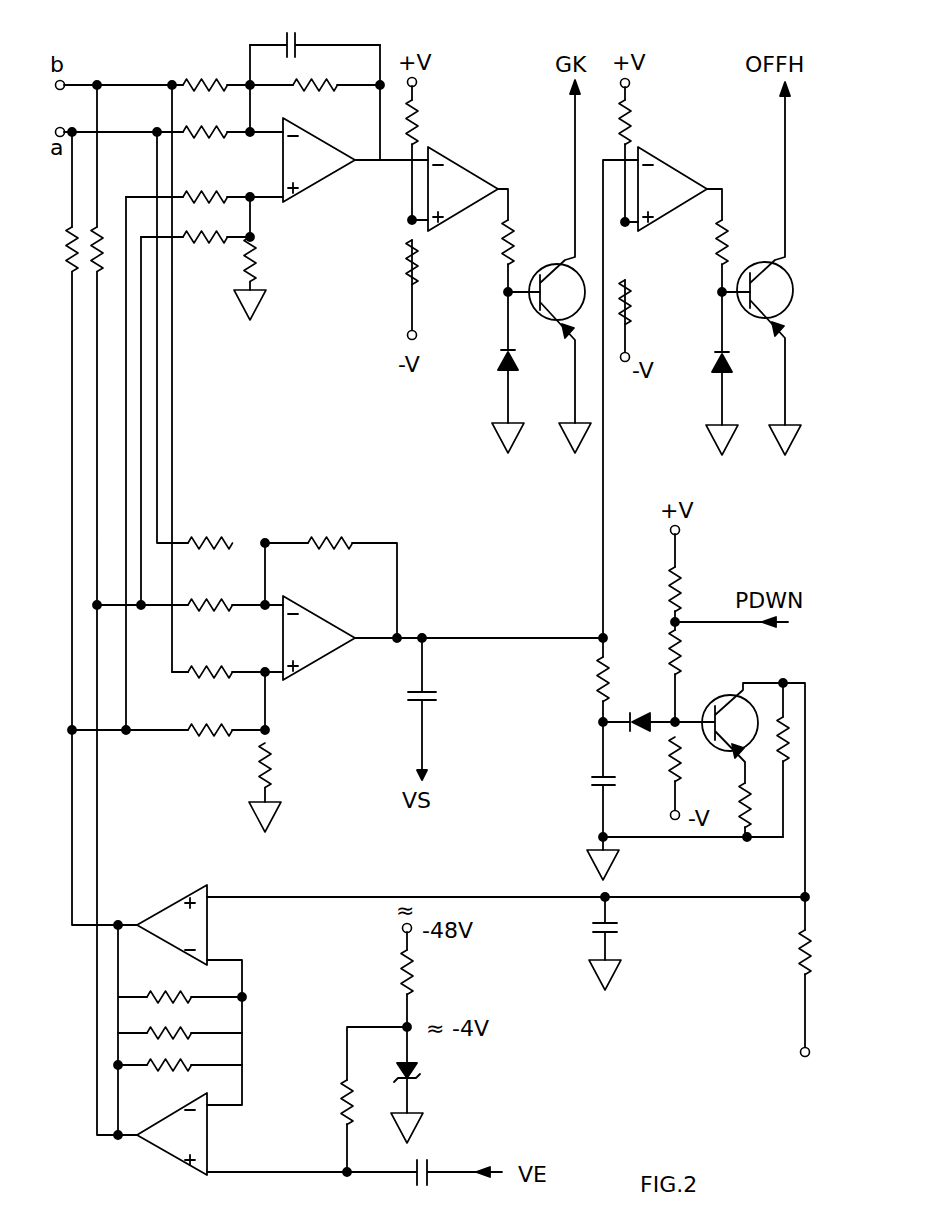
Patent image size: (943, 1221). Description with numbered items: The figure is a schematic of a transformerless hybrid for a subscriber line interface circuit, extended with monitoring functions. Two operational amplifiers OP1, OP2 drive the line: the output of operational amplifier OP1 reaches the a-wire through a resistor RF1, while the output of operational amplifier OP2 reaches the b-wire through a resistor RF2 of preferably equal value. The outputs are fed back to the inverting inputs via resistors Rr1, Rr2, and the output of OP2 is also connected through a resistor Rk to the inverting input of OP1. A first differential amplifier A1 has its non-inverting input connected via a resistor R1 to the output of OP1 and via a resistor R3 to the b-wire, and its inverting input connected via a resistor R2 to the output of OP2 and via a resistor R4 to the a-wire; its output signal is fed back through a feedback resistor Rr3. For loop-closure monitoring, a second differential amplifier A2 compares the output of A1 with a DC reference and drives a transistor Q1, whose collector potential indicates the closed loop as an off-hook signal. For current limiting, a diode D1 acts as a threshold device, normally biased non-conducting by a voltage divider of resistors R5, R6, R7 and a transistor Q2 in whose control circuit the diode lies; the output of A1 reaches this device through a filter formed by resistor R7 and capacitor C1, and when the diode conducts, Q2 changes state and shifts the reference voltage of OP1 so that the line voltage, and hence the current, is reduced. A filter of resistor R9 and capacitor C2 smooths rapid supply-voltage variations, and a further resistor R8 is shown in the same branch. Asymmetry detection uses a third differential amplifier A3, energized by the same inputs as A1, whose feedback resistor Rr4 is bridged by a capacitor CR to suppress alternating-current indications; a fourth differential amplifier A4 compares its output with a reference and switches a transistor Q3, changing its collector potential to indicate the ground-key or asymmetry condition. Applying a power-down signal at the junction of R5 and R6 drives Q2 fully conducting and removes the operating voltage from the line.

The capacitor CR is at (291, 42).
The feedback resistor Rr4 is at (298, 78).
The resistor RF1 is at (76, 225).
The resistor RF2 is at (99, 225).
The third differential amplifier A3 is at (323, 181).
The fourth differential amplifier A4 is at (448, 220).
The transistor Q3 is at (559, 258).
The second differential amplifier A2 is at (658, 220).
The transistor Q1 is at (769, 260).
The resistor R4 is at (230, 536).
The feedback resistor Rr3 is at (312, 536).
The resistor R2 is at (230, 598).
The resistor R3 is at (230, 666).
The resistor R1 is at (224, 724).
The first differential amplifier A1 is at (313, 661).
The voltage divider resistor R5 is at (680, 576).
The voltage divider resistor R6 is at (686, 652).
The resistor R7 is at (680, 770).
The resistor R8 is at (596, 692).
The diode D1 is at (620, 714).
The transistor Q2 is at (730, 704).
The capacitor C1 is at (590, 781).
The capacitor C2 is at (622, 943).
The resistor R9 is at (802, 956).
The operational amplifier OP1 is at (176, 897).
The operational amplifier OP2 is at (170, 1160).
The feedback resistor Rr2 is at (192, 986).
The resistor Rk is at (180, 1024).
The feedback resistor Rr1 is at (190, 1058).